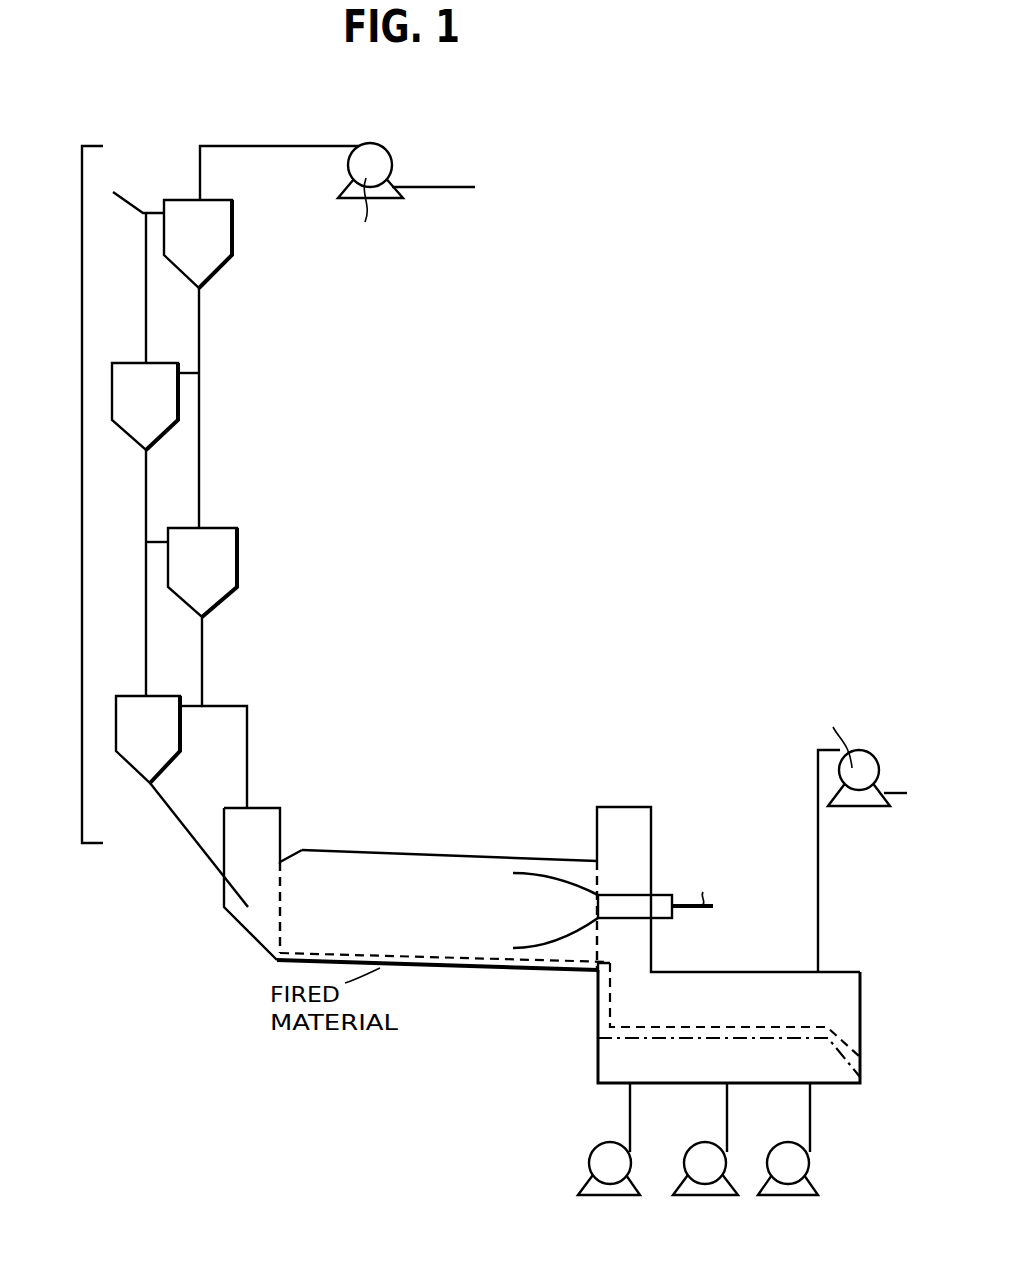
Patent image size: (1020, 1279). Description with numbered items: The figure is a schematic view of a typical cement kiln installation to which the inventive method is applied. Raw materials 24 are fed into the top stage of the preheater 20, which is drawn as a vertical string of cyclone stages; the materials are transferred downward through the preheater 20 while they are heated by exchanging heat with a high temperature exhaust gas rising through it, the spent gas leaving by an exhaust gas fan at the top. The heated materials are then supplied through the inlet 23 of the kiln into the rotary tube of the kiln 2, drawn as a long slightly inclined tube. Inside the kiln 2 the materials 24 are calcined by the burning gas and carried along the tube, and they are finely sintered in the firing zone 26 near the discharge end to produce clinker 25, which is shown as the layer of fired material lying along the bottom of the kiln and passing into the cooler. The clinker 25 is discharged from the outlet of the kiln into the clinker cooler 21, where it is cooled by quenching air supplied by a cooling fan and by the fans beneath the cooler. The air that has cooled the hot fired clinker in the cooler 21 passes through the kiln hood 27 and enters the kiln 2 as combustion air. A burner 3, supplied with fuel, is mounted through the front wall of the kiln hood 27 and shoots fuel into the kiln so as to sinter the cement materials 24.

The kiln 2 is at (323, 855).
The burner 3 is at (637, 903).
The preheater 20 is at (84, 463).
The clinker cooler 21 is at (733, 1023).
The inlet 23 is at (258, 918).
The raw materials 24 is at (126, 197).
The clinker 25 is at (593, 1027).
The firing zone 26 is at (560, 948).
The kiln hood 27 is at (625, 823).